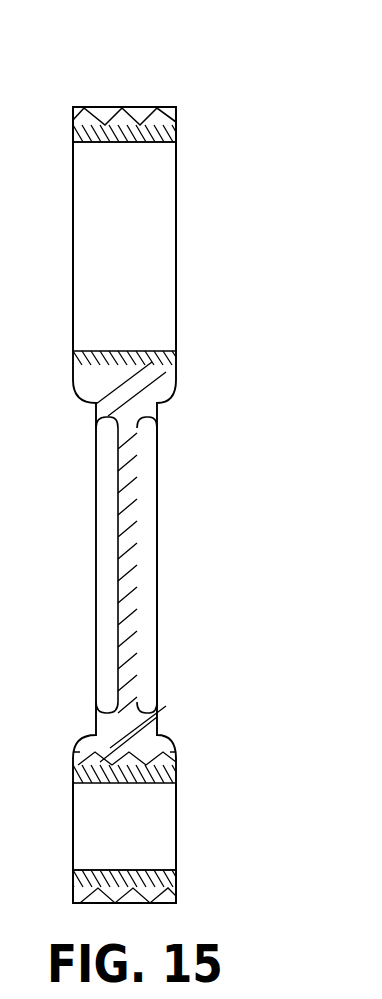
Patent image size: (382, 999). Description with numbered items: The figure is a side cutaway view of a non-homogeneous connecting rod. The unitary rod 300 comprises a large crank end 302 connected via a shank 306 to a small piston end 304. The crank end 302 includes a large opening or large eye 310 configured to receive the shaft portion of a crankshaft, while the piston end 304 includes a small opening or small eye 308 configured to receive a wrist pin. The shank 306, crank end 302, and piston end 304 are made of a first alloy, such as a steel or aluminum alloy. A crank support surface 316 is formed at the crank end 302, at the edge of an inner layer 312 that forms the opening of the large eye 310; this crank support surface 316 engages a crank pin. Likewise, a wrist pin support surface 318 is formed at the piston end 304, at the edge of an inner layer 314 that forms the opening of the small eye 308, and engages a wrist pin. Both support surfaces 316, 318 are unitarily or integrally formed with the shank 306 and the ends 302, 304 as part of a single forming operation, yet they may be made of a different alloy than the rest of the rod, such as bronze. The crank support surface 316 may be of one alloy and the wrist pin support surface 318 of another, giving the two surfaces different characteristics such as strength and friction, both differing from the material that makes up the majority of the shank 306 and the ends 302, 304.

The unitary rod 300 is at (162, 628).
The crank end 302 is at (111, 107).
The piston end 304 is at (165, 898).
The shank 306 is at (128, 508).
The small eye 308 is at (140, 820).
The large eye 310 is at (141, 261).
The inner layer 312 is at (176, 120).
The inner layer 314 is at (176, 775).
The crank support surface 316 is at (123, 142).
The wrist pin support surface 318 is at (128, 870).